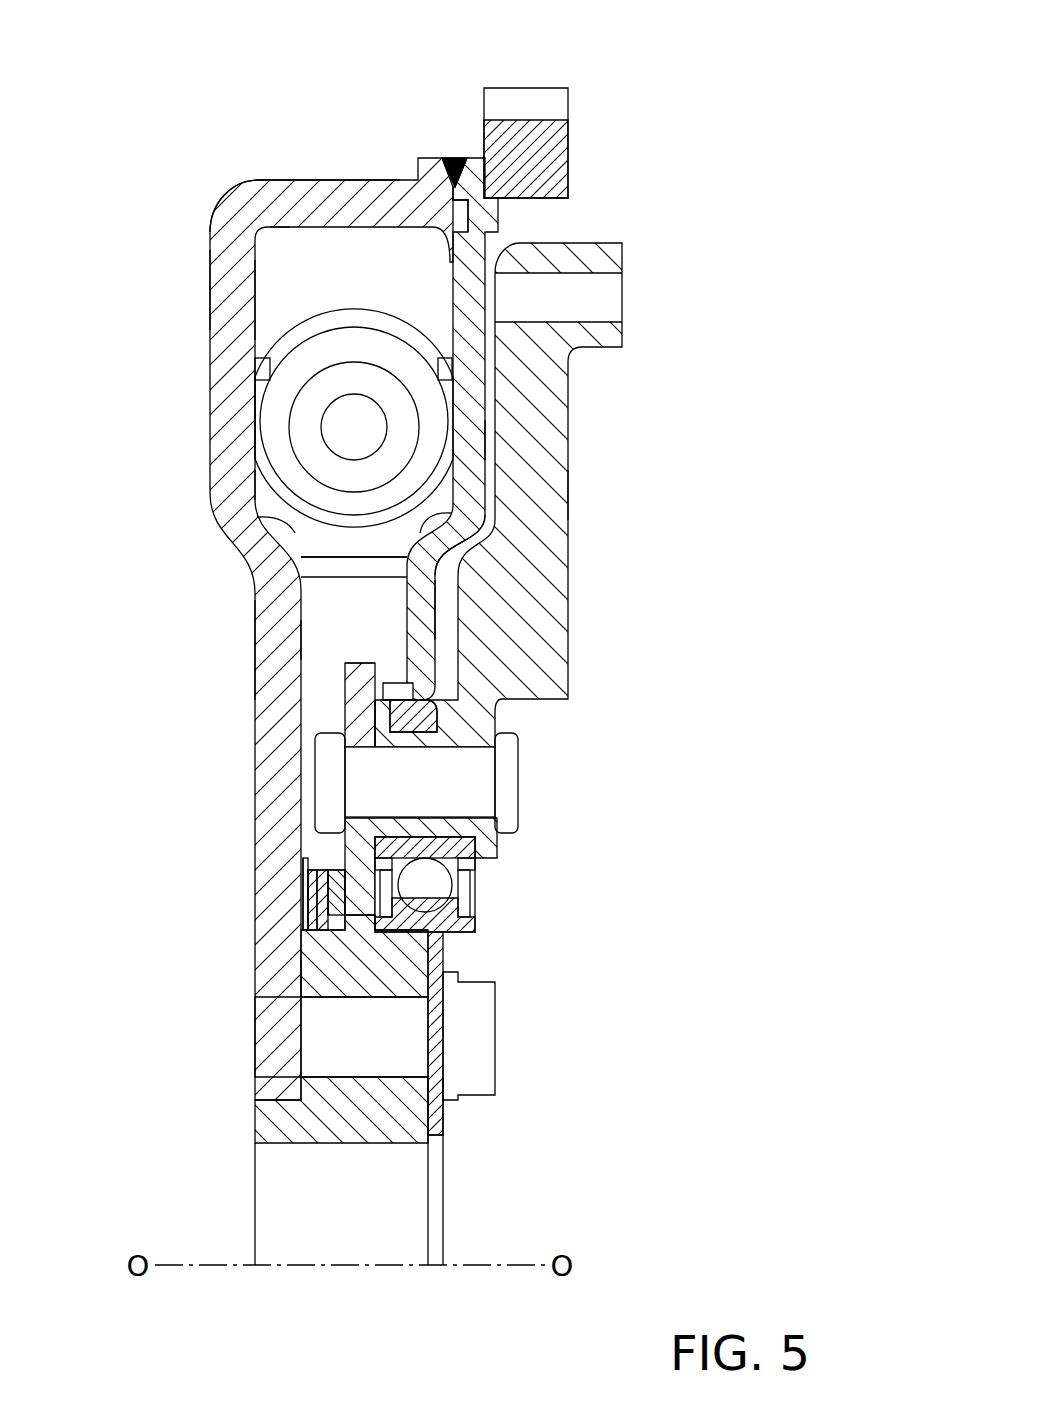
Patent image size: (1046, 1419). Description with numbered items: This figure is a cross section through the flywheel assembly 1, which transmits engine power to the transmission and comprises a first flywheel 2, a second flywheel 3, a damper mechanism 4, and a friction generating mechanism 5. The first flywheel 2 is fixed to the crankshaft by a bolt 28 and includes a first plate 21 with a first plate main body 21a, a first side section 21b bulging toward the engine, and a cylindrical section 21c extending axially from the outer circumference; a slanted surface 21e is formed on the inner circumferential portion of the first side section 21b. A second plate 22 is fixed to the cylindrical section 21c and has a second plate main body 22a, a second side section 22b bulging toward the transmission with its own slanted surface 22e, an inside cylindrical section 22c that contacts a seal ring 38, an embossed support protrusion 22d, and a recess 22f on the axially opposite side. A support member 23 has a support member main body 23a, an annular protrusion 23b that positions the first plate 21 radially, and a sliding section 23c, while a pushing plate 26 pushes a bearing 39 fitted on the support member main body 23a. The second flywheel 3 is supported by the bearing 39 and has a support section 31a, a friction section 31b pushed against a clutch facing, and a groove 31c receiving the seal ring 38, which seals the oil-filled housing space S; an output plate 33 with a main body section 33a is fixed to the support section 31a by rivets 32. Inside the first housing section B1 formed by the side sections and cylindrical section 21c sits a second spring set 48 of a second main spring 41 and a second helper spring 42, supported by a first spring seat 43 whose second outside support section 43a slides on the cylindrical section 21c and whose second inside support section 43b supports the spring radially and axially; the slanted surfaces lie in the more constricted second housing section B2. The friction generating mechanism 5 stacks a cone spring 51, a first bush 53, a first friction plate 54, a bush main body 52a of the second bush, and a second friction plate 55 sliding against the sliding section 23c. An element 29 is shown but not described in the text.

The flywheel assembly 1 is at (620, 121).
The first flywheel 2 is at (220, 192).
The second flywheel 3 is at (645, 278).
The damper mechanism 4 is at (245, 365).
The friction generating mechanism 5 is at (300, 900).
The first plate 21 is at (245, 575).
The first plate main body 21a is at (268, 620).
The first side section 21b is at (238, 272).
The cylindrical section 21c is at (345, 200).
The slanted surface 21e is at (292, 528).
The second plate 22 is at (492, 404).
The second plate main body 22a is at (478, 622).
The second side section 22b is at (470, 440).
The inside cylindrical section 22c is at (400, 690).
The support protrusion 22d is at (495, 218).
The slanted surface 22e is at (480, 545).
The recess 22f is at (450, 205).
The support member 23 is at (300, 948).
The support member main body 23a is at (320, 978).
The annular protrusion 23b is at (270, 1122).
The sliding section 23c is at (360, 922).
The pushing plate 26 is at (435, 1118).
The bolt 28 is at (470, 1035).
The magnet 29 is at (566, 160).
The support section 31a is at (455, 823).
The friction section 31b is at (540, 496).
The groove 31c is at (372, 720).
The rivet 32 is at (460, 775).
The output plate 33 is at (337, 677).
The main body section 33a is at (358, 697).
The seal ring 38 is at (420, 718).
The bearing 39 is at (480, 890).
The second main spring 41 is at (280, 400).
The second helper spring 42 is at (318, 448).
The first spring seat 43 is at (252, 234).
The second outside support section 43a is at (285, 302).
The second inside support section 43b is at (275, 500).
The second spring set 48 is at (250, 428).
The cone spring 51 is at (318, 882).
The bush main body 52a is at (308, 870).
The first bush 53 is at (322, 915).
The first friction plate 54 is at (336, 885).
The second friction plate 55 is at (360, 950).
The housing space S is at (450, 270).
The first housing section B1 is at (278, 224).
The second housing section B2 is at (297, 646).